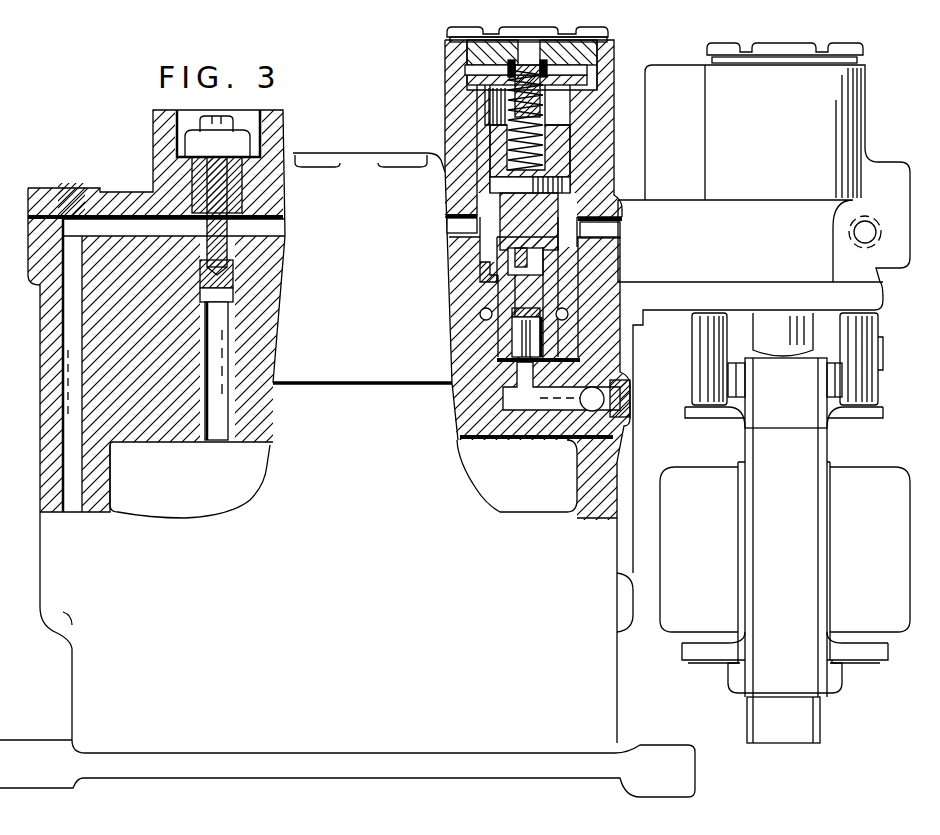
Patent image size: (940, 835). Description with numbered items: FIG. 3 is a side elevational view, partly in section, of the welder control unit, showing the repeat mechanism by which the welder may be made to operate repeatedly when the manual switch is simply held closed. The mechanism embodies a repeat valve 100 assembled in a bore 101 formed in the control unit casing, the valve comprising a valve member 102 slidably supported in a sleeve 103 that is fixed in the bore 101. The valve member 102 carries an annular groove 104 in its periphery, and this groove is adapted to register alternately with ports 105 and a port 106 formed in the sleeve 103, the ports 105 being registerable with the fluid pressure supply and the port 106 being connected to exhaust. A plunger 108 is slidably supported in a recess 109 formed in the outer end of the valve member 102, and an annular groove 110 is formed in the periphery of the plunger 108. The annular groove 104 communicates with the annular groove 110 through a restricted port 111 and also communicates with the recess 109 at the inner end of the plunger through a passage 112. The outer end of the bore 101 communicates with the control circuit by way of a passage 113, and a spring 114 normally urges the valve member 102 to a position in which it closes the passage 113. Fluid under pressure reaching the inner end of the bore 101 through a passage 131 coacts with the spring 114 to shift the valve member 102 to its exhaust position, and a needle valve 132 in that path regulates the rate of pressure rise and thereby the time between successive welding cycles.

The valve 100 is at (440, 34).
The bore 101 is at (590, 122).
The valve member 102 is at (515, 211).
The sleeve 103 is at (567, 170).
The annular groove 104 is at (553, 270).
The ports 105 is at (483, 228).
The port 106 is at (508, 273).
The plunger 108 is at (527, 340).
The recess 109 is at (523, 320).
The annular groove 110 is at (513, 306).
The restricted port 111 is at (497, 274).
The passage 112 is at (577, 300).
The passage 113 is at (537, 402).
The spring 114 is at (510, 120).
The passage 131 is at (603, 58).
The needle valve 132 is at (222, 180).